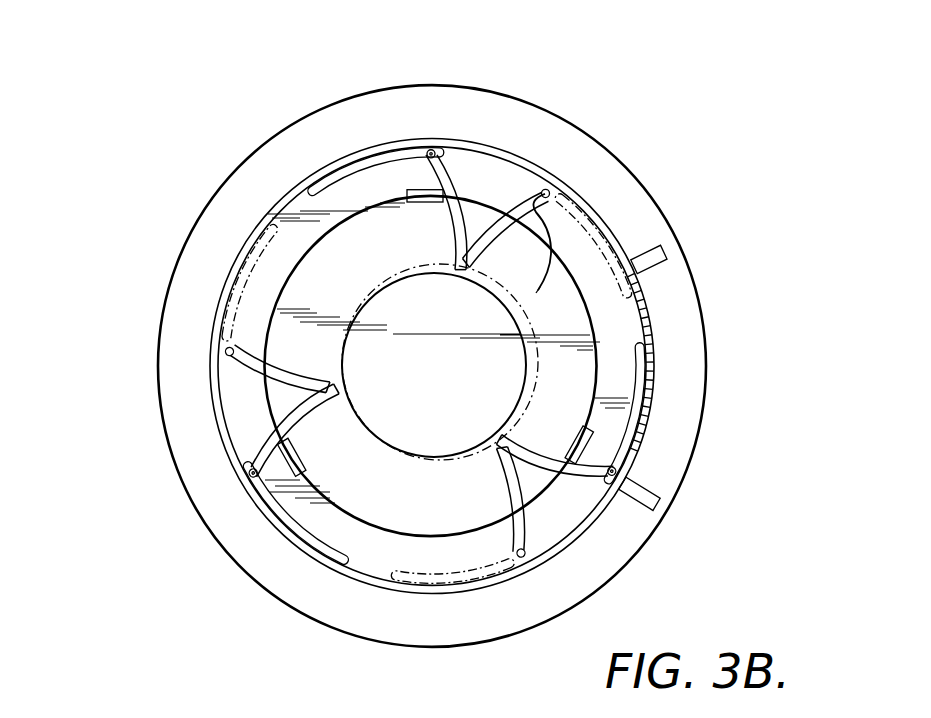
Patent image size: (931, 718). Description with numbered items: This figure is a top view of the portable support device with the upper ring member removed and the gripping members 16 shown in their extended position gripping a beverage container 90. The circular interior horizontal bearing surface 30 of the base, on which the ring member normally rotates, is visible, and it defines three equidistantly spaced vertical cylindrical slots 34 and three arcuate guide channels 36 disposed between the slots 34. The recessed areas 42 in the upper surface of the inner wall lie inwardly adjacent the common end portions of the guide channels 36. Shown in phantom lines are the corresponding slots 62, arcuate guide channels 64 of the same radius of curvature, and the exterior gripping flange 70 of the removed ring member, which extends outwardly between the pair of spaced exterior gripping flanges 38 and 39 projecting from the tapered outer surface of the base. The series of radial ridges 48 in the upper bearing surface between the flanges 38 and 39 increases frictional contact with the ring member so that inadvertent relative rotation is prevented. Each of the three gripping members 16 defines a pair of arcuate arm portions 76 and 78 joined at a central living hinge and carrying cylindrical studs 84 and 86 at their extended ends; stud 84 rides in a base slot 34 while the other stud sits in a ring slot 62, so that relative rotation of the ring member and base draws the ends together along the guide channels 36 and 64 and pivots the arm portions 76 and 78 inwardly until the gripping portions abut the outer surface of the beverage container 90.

The beverage container gripping member 16 is at (486, 246).
The interior horizontal bearing surface 30 is at (610, 353).
The vertical cylindrical slot 34 is at (556, 190).
The arcuate guide channel 36 is at (383, 162).
The exterior gripping flange 38 is at (668, 262).
The exterior gripping flange 39 is at (658, 487).
The recessed area 42 is at (425, 192).
The radial ridge 48 is at (655, 348).
The vertical cylindrical slot 62 is at (432, 152).
The arcuate guide channel 64 is at (612, 250).
The exterior gripping flange 70 is at (695, 465).
The arm portion 76 is at (534, 255).
The arm portion 78 is at (427, 267).
The cylindrical stud 84 is at (546, 190).
The cylindrical stud 86 is at (428, 150).
The beverage container 90 is at (544, 294).